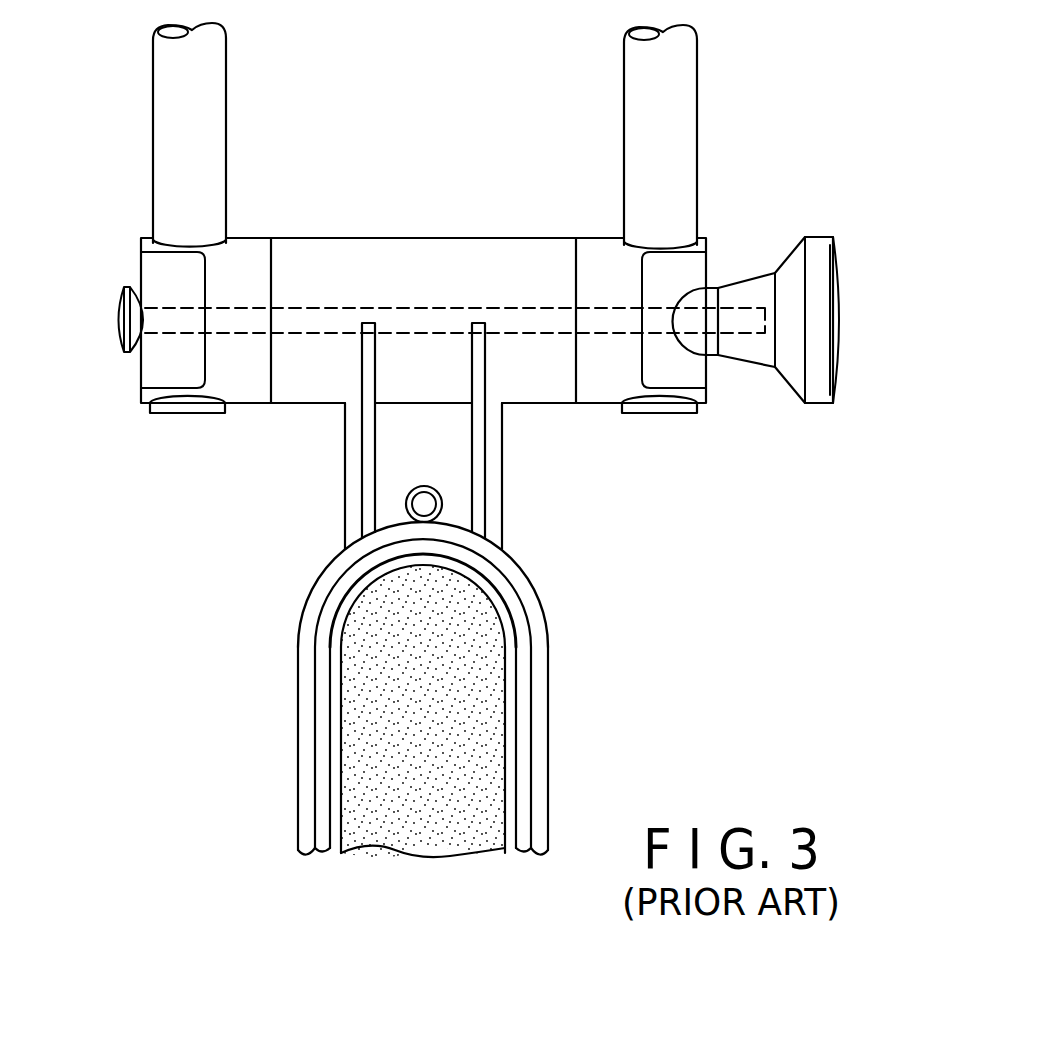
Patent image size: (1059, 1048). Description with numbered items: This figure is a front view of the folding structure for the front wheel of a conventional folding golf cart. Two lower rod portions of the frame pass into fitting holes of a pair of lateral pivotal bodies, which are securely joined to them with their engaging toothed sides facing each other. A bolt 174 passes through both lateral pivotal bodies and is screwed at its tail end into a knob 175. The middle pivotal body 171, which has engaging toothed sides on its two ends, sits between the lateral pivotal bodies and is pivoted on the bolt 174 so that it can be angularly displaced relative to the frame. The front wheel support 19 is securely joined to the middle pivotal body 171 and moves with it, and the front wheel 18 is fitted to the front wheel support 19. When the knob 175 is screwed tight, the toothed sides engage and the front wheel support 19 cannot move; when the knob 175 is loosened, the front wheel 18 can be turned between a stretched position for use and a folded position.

The middle pivotal body 171 is at (460, 252).
The bolt 174 is at (535, 333).
The knob 175 is at (818, 245).
The front wheel 18 is at (490, 757).
The front wheel support 19 is at (535, 653).